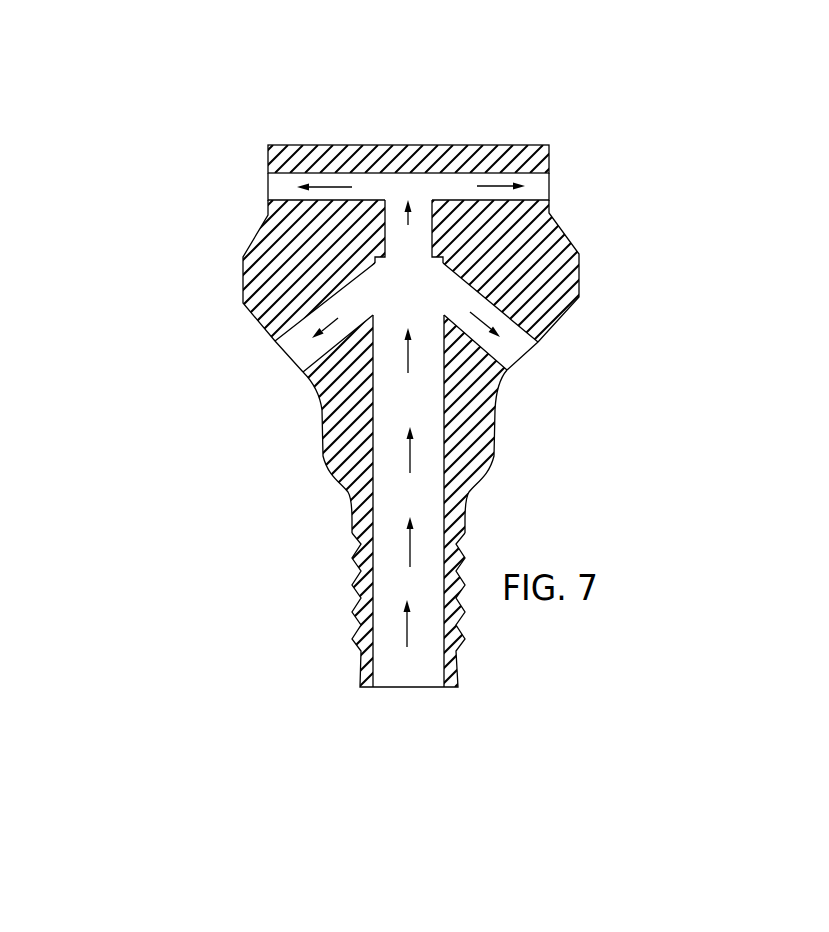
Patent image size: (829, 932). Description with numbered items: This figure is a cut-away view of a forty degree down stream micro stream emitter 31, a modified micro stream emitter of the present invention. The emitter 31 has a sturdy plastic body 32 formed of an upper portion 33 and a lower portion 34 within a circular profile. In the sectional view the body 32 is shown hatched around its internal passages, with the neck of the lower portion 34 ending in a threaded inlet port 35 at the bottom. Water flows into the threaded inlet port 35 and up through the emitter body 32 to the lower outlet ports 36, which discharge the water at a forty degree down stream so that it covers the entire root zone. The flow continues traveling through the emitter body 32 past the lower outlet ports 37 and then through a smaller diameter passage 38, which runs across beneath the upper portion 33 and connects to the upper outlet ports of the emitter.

The micro stream emitter 31 is at (310, 85).
The plastic body 32 is at (243, 273).
The upper portion 33 is at (438, 146).
The lower portion 34 is at (323, 444).
The threaded inlet port 35 is at (417, 687).
The lower outlet ports 36 is at (297, 360).
The lower outlet ports 37 is at (417, 232).
The smaller diameter passage 38 is at (270, 186).